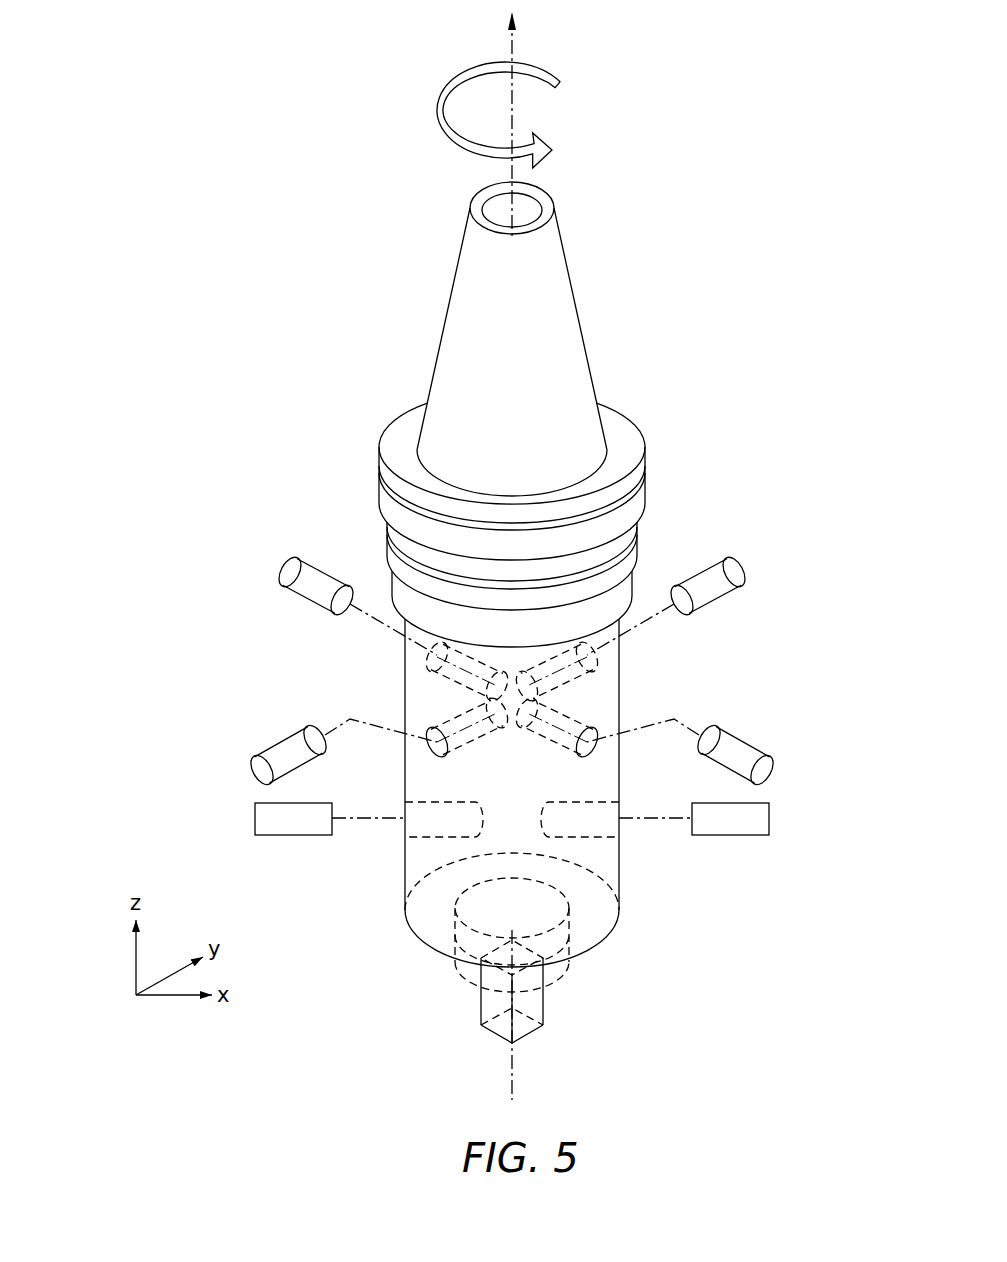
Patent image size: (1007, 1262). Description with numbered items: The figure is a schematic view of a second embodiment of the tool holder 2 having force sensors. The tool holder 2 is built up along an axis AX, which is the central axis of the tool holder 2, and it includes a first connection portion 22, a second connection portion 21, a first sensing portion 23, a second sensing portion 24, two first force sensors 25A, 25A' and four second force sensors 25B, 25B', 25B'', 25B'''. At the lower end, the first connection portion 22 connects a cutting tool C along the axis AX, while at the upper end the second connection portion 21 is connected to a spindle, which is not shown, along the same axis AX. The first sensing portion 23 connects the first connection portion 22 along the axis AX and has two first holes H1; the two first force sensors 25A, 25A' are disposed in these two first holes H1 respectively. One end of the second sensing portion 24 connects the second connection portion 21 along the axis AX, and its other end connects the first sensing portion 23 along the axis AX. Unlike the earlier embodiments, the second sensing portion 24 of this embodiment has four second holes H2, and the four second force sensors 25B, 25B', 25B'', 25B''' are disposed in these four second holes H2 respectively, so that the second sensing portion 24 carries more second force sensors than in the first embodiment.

The tool holder 2 is at (358, 323).
The second connection portion 21 is at (558, 320).
The first connection portion 22 is at (548, 975).
The first sensing portion 23 is at (787, 747).
The second sensing portion 24 is at (787, 575).
The first force sensor 25A is at (694, 854).
The first force sensor 25A' is at (330, 854).
The second force sensor 25B is at (341, 734).
The second force sensor 25B' is at (668, 584).
The second force sensor 25B'' is at (682, 734).
The second force sensor 25B''' is at (355, 584).
The first hole H1 is at (405, 830).
The second hole H2 is at (425, 740).
The cutting tool C is at (495, 1003).
The axis AX is at (508, 45).